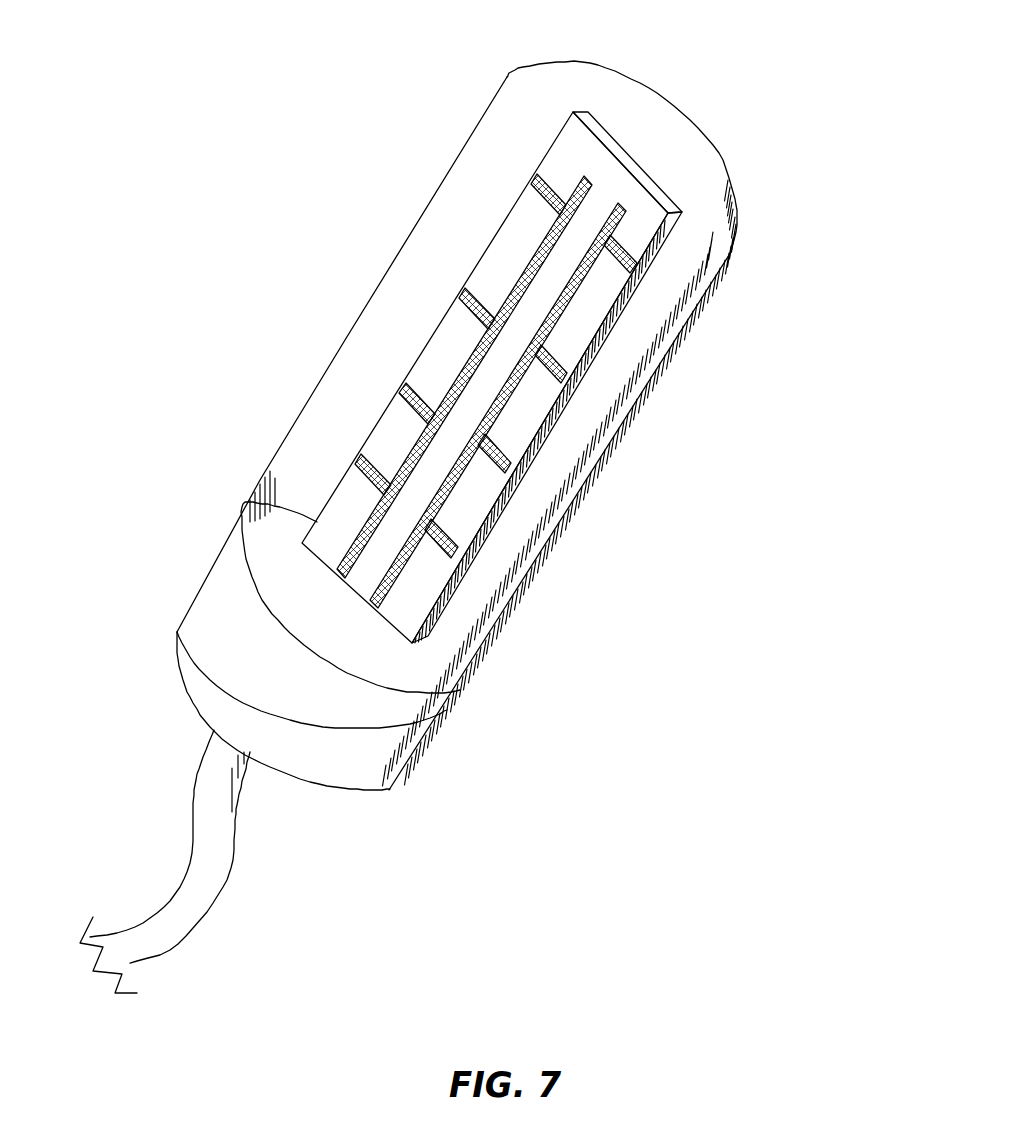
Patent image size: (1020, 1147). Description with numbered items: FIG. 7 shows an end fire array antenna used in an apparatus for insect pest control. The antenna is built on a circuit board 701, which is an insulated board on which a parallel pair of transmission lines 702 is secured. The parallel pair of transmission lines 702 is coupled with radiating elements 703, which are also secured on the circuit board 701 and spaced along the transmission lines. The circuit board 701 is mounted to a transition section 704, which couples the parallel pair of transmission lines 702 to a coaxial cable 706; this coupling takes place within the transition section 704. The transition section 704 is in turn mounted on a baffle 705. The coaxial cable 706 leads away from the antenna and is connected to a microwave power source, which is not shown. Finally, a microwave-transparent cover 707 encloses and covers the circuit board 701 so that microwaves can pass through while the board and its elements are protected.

The circuit board 701 is at (567, 163).
The parallel pair of transmission lines 702 is at (624, 206).
The radiating elements 703 is at (560, 357).
The transition section 704 is at (443, 708).
The baffle 705 is at (392, 758).
The coaxial cable 706 is at (222, 878).
The microwave-transparent cover 707 is at (733, 194).